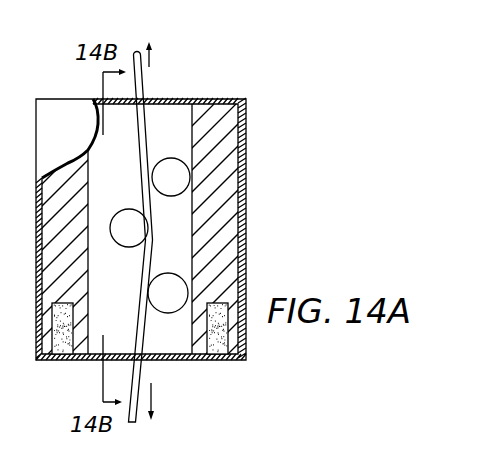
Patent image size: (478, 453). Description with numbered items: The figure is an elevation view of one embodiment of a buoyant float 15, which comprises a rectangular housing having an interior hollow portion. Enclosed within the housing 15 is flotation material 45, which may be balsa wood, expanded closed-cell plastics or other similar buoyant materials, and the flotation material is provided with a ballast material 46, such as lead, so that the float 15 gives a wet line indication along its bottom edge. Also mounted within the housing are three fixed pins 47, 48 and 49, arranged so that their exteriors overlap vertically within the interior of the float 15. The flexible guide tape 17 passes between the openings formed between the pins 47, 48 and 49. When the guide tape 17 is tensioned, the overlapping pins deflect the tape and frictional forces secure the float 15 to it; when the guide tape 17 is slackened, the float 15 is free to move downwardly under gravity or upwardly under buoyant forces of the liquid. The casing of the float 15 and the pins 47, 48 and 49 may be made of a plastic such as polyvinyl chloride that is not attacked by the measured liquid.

The float 15 is at (247, 193).
The flexible guide tape 17 is at (143, 87).
The flotation material 45 is at (63, 272).
The ballast material 46 is at (63, 345).
The fixed pin 47 is at (167, 295).
The fixed pin 48 is at (122, 218).
The fixed pin 49 is at (170, 172).